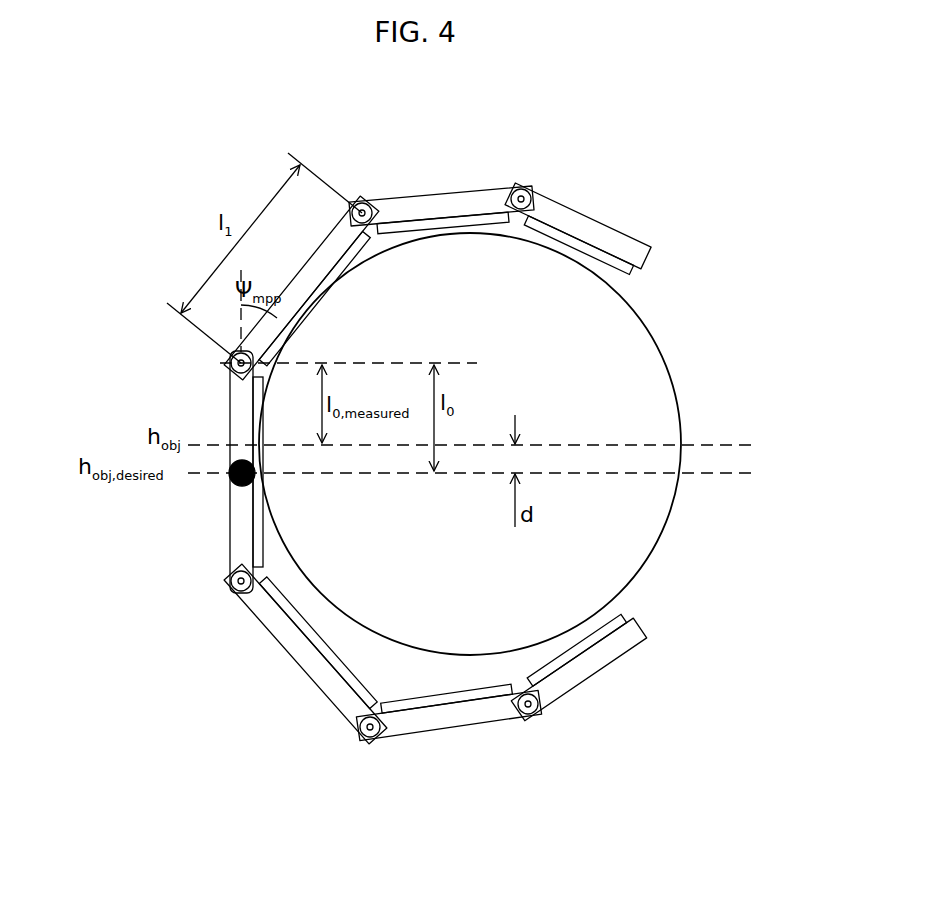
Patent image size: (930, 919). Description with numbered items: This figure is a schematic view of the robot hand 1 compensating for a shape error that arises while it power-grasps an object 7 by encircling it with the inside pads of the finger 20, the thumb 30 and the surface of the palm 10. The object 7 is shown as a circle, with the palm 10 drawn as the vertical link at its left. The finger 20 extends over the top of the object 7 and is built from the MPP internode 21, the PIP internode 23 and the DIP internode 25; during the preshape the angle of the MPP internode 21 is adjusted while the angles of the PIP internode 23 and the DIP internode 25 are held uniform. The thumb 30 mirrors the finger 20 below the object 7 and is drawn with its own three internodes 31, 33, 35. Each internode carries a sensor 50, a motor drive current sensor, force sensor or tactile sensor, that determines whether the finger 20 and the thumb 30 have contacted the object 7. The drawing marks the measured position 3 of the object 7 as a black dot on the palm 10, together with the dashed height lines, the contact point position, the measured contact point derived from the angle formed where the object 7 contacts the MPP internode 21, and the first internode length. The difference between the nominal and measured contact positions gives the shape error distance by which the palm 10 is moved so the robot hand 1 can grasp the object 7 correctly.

The robot hand 1 is at (744, 757).
The position of the object 3 is at (238, 462).
The object 7 is at (662, 367).
The palm 10 is at (240, 523).
The finger 20 is at (503, 132).
The MPP internode 21 is at (335, 237).
The PIP internode 23 is at (424, 207).
The DIP internode 25 is at (555, 207).
The thumb 30 is at (605, 825).
The first lower link 31 is at (327, 680).
The second lower link 33 is at (427, 723).
The third lower link 35 is at (572, 678).
The sensor 50 is at (337, 267).